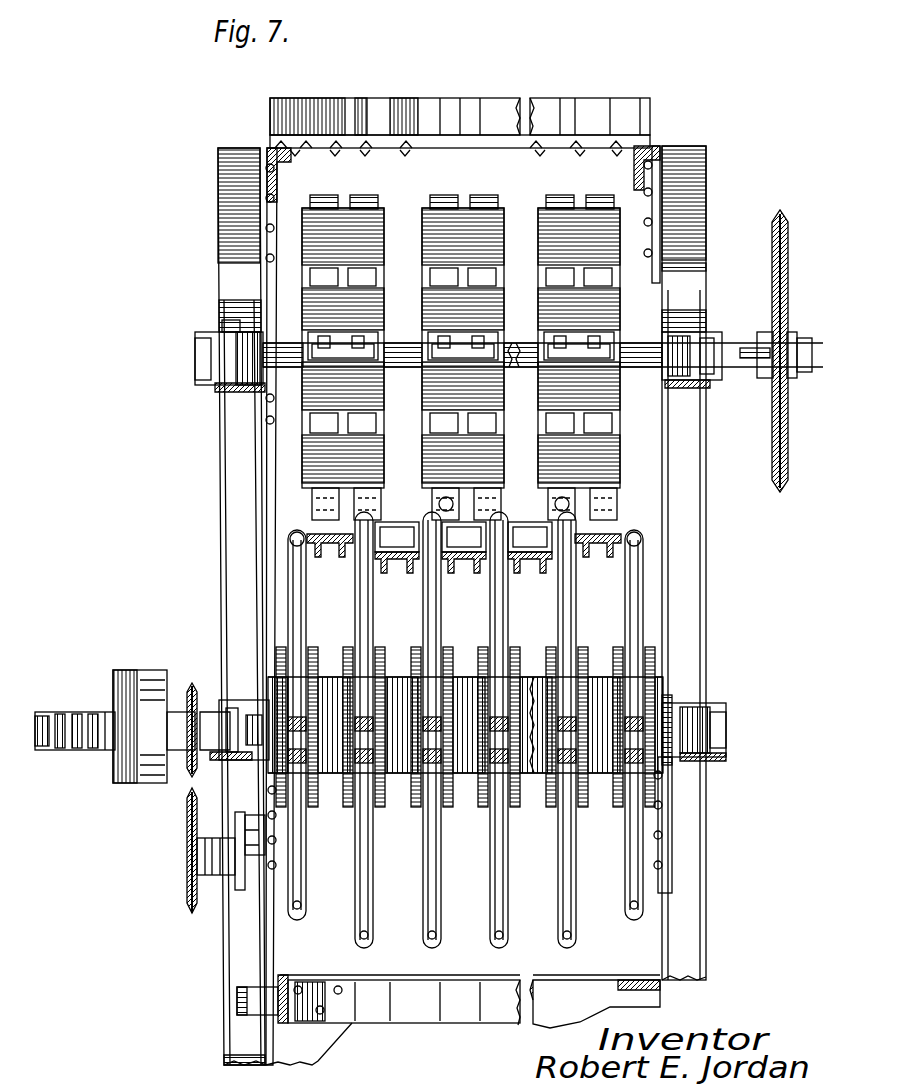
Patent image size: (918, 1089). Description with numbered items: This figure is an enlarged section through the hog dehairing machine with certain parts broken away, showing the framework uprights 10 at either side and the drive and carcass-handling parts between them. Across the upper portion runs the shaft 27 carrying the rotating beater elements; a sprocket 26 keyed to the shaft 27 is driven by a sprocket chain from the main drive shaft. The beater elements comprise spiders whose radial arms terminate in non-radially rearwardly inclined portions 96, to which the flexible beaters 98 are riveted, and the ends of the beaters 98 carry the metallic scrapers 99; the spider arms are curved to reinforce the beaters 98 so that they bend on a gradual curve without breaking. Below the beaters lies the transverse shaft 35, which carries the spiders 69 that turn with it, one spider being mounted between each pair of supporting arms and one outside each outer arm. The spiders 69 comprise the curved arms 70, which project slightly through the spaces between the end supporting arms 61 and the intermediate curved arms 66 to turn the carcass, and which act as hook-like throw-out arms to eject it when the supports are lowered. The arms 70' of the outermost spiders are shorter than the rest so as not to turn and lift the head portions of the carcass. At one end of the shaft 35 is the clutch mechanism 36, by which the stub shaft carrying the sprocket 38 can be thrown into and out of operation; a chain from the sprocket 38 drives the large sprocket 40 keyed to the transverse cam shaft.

The upright 10 is at (232, 539).
The sprocket 26 is at (787, 283).
The shaft 27 is at (631, 346).
The transverse shaft 35 is at (672, 700).
The clutch mechanism 36 is at (114, 778).
The sprocket 38 is at (182, 768).
The large sprocket 40 is at (184, 845).
The curved portion of arm extension 61 is at (338, 550).
The curved arm 66 is at (403, 566).
The spider 69 is at (312, 808).
The curved arm 70 is at (465, 730).
The arm of outermost spider 70' is at (465, 725).
The non-radially rearwardly inclined portion 96 is at (378, 346).
The flexible beater 98 is at (424, 240).
The metallic scraper 99 is at (362, 204).